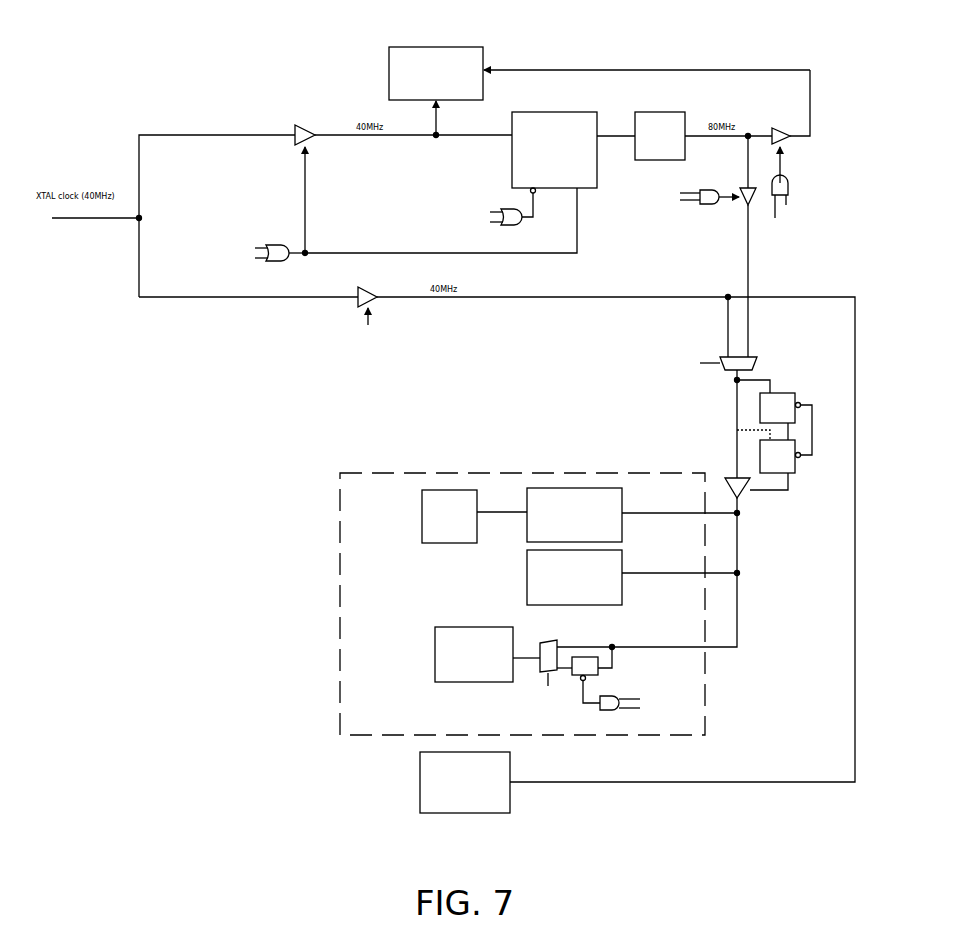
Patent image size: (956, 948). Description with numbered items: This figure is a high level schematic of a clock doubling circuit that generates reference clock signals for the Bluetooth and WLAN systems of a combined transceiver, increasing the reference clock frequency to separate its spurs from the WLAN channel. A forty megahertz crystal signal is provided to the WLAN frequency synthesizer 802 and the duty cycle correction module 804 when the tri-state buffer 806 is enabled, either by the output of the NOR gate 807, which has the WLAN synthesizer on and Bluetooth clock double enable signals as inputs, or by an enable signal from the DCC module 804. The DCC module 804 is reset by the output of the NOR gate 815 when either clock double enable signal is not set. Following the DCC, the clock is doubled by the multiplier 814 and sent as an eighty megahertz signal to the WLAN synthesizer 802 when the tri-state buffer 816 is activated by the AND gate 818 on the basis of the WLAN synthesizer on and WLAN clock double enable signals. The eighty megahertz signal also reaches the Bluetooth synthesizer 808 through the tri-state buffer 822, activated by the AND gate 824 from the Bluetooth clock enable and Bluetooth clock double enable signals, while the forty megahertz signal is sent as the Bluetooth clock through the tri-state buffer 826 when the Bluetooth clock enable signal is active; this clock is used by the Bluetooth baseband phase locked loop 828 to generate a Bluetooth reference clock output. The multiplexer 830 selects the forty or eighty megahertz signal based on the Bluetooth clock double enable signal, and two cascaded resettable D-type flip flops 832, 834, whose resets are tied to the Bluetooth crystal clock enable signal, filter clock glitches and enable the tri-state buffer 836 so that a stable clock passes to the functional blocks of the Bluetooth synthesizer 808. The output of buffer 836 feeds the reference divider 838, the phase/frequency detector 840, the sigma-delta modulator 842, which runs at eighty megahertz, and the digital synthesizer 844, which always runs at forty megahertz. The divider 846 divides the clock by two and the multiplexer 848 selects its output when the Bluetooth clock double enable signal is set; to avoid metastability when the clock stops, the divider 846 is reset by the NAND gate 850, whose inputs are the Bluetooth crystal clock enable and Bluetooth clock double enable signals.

The WLAN frequency synthesizer 802 is at (445, 47).
The duty cycle correction module 804 is at (562, 112).
The tri-state buffer 806 is at (296, 129).
The NOR gate 807 is at (276, 244).
The Bluetooth synthesizer 808 is at (415, 473).
The multiplier 814 is at (665, 112).
The NOR gate 815 is at (519, 226).
The tri-state buffer 816 is at (782, 127).
The AND gate 818 is at (790, 179).
The tri-state buffer 822 is at (743, 191).
The AND gate 824 is at (712, 207).
The tri-state buffer 826 is at (380, 300).
The Bluetooth baseband phase locked loop 828 is at (452, 813).
The multiplexer 830 is at (720, 358).
The resettable D-type flip flop 832 is at (786, 393).
The resettable D-type flip flop 834 is at (792, 475).
The tri-state buffer 836 is at (748, 495).
The reference divider 838 is at (574, 515).
The phase/frequency detector 840 is at (449, 516).
The sigma-delta modulator 842 is at (574, 577).
The digital synthesizer 844 is at (434, 660).
The divider 846 is at (591, 657).
The multiplexer 848 is at (544, 643).
The NAND gate 850 is at (626, 710).